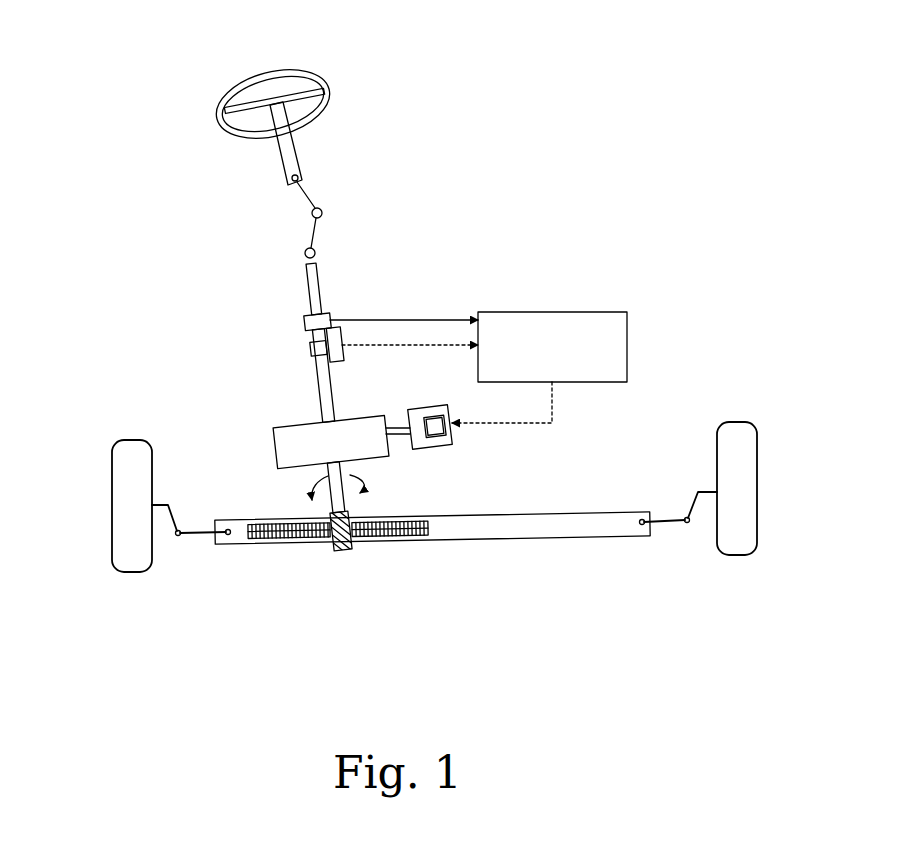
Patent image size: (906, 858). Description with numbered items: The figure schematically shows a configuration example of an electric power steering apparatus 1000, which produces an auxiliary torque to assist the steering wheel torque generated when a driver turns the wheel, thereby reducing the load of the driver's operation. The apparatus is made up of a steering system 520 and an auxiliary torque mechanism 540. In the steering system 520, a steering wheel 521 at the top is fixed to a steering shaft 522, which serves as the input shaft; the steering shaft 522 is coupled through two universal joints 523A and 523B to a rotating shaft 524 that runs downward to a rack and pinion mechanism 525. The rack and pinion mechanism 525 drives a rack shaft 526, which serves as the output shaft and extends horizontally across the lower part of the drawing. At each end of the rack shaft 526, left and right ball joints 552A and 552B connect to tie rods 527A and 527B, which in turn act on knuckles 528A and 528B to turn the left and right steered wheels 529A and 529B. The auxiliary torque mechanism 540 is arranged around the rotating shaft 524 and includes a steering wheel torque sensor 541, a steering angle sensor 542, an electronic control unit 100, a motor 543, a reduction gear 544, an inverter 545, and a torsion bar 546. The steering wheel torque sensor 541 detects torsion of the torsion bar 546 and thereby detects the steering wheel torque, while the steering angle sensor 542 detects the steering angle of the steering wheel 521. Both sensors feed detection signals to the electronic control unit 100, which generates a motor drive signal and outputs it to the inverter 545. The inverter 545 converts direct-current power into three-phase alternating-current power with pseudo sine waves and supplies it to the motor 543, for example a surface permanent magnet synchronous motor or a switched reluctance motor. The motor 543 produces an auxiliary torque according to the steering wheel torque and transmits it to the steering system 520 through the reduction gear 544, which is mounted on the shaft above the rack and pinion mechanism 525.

The electric power steering apparatus 1000 is at (469, 75).
The electronic control unit (ECU) 100 is at (592, 314).
The steering system 520 is at (282, 273).
The steering wheel 521 is at (238, 85).
The steering shaft 522 is at (297, 148).
The universal joint 523A is at (322, 213).
The universal joint 523B is at (316, 252).
The rotating shaft 524 is at (320, 292).
The rack and pinion mechanism 525 is at (352, 560).
The rack shaft 526 is at (468, 528).
The tie rod 527A is at (190, 532).
The tie rod 527B is at (675, 520).
The knuckle 528A is at (165, 492).
The knuckle 528B is at (693, 487).
The steered wheel 529A is at (135, 557).
The steered wheel 529B is at (730, 545).
The auxiliary torque mechanism 540 is at (500, 283).
The steering wheel torque sensor 541 is at (342, 353).
The steering angle sensor 542 is at (332, 318).
The motor 543 is at (418, 407).
The reduction gear 544 is at (278, 428).
The inverter 545 is at (437, 432).
The torsion bar 546 is at (312, 348).
The ball joint 552A is at (230, 546).
The ball joint 552B is at (640, 537).